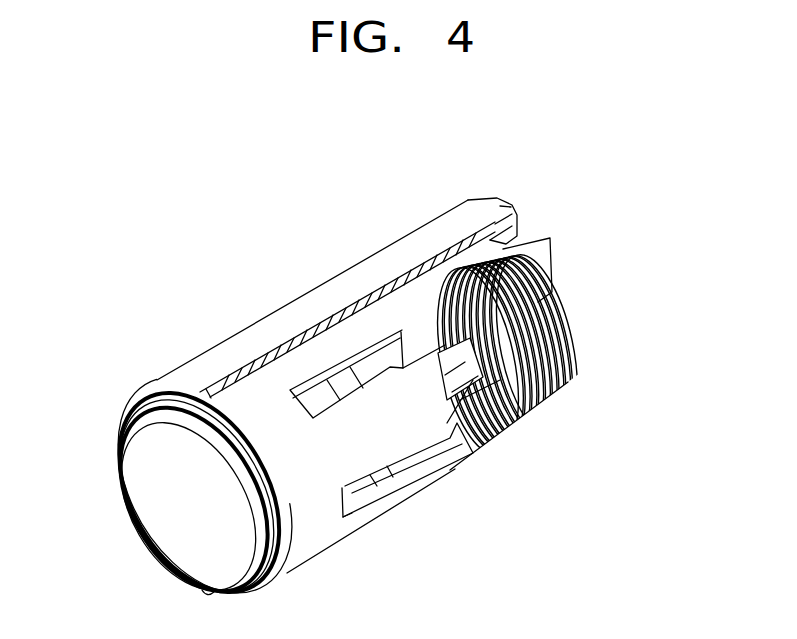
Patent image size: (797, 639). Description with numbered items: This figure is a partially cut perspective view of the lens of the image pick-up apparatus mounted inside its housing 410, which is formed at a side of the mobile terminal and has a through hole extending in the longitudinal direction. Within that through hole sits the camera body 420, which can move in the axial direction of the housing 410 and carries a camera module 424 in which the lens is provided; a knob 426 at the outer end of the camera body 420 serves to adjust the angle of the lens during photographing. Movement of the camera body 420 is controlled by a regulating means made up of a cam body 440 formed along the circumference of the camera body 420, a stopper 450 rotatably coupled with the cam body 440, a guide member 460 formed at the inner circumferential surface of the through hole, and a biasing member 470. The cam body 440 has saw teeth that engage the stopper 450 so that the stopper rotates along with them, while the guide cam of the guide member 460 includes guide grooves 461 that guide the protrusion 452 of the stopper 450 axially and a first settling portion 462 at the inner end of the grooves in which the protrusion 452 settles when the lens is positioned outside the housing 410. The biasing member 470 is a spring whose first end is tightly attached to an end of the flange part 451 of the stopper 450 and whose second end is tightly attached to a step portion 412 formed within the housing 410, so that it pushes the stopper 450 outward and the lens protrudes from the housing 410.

The housing 410 is at (272, 328).
The step portion 412 is at (502, 216).
The camera body 420 is at (144, 454).
The camera module 424 is at (550, 262).
The knob 426 is at (190, 422).
The cam body 440 is at (372, 318).
The stopper 450 is at (466, 392).
The flange part 451 is at (376, 362).
The protrusion 452 is at (424, 276).
The guide member 460 is at (409, 421).
The guide grooves 461 is at (387, 486).
The first settling portion 462 is at (355, 513).
The biasing member 470 is at (570, 364).